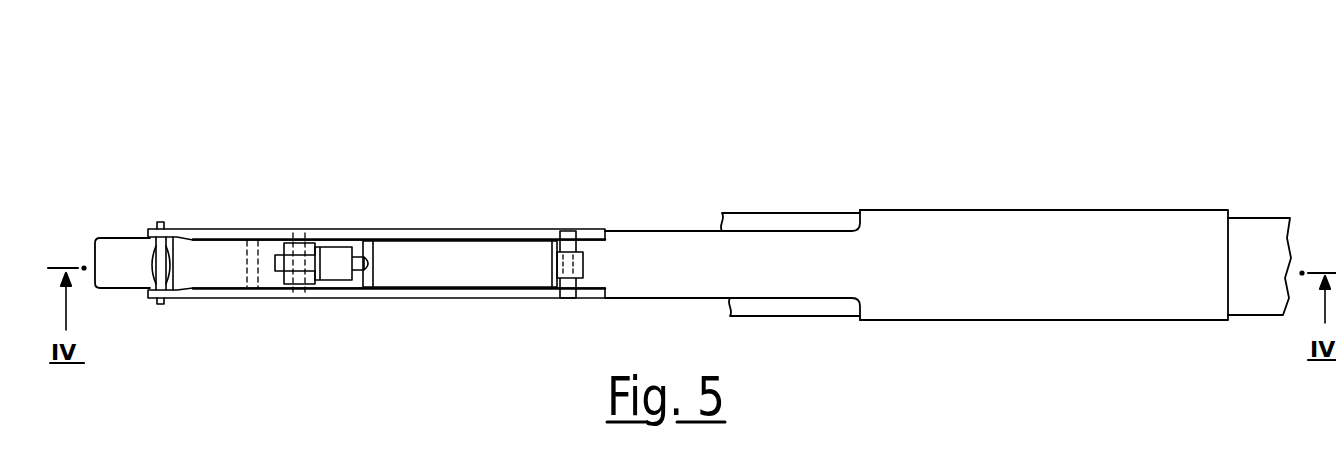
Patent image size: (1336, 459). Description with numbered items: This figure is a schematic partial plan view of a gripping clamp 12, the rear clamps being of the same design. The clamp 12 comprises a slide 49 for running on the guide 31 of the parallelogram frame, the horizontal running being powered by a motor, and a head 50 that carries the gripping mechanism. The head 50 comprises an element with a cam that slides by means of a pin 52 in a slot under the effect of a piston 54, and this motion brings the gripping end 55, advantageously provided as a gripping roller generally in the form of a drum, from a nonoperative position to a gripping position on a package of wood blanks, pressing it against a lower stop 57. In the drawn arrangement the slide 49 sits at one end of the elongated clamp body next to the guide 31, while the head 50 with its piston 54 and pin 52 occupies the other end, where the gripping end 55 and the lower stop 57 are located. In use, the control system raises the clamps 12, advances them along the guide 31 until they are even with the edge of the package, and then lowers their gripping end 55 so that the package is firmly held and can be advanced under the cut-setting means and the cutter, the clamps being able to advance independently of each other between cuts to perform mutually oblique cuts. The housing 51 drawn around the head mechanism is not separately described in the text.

The gripping clamp 12 is at (669, 149).
The guide 31 is at (1253, 295).
The slide 49 is at (1122, 212).
The head 50 is at (402, 183).
The housing 51 is at (217, 248).
The pin 52 is at (243, 270).
The piston 54 is at (457, 252).
The gripping end 55 is at (150, 262).
The lower stop 57 is at (108, 248).